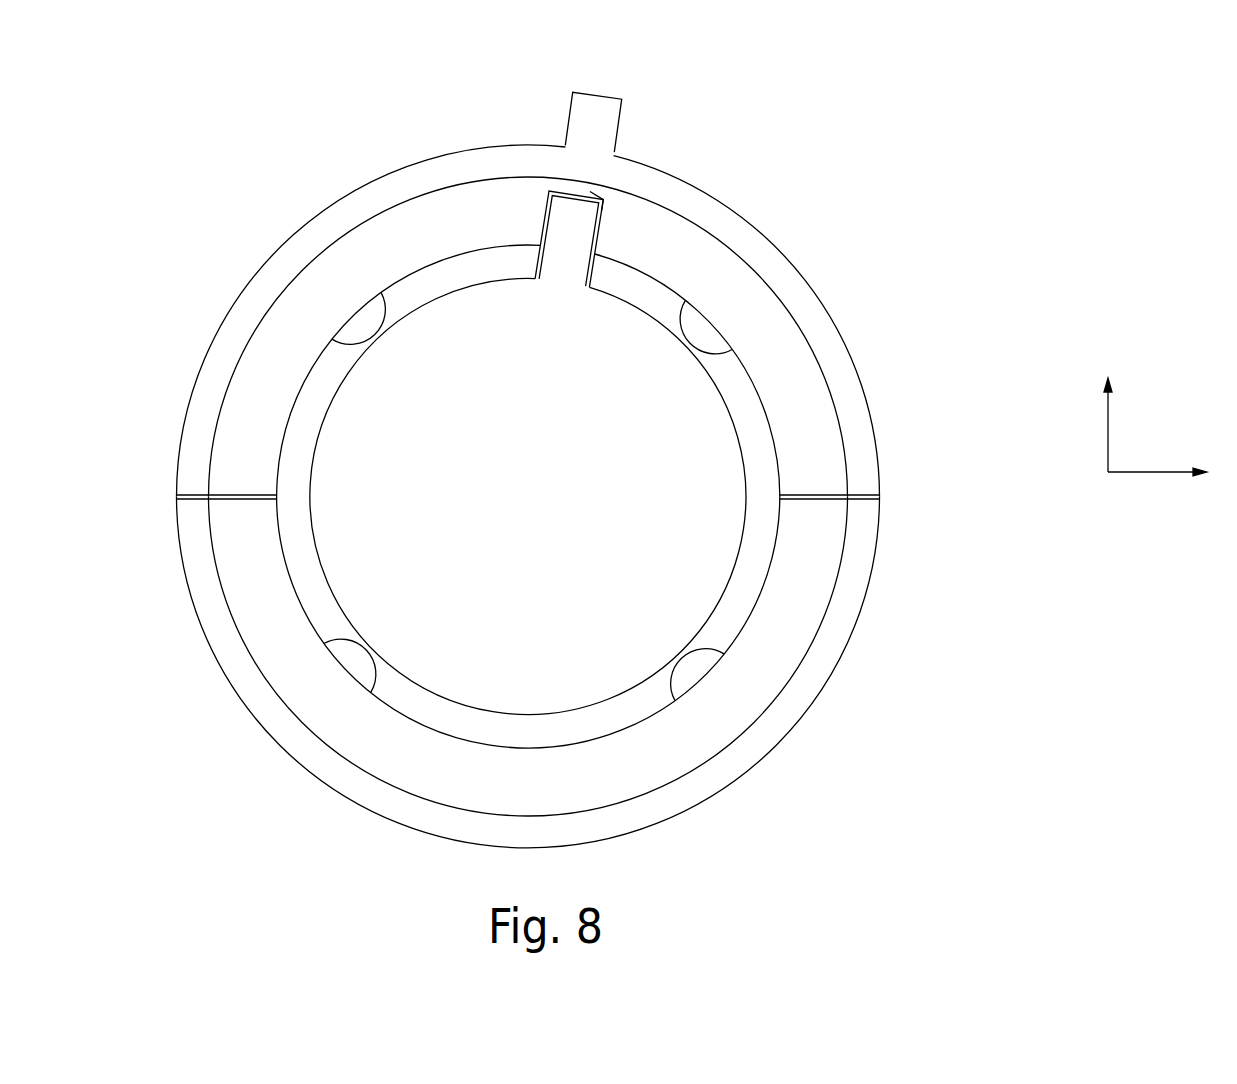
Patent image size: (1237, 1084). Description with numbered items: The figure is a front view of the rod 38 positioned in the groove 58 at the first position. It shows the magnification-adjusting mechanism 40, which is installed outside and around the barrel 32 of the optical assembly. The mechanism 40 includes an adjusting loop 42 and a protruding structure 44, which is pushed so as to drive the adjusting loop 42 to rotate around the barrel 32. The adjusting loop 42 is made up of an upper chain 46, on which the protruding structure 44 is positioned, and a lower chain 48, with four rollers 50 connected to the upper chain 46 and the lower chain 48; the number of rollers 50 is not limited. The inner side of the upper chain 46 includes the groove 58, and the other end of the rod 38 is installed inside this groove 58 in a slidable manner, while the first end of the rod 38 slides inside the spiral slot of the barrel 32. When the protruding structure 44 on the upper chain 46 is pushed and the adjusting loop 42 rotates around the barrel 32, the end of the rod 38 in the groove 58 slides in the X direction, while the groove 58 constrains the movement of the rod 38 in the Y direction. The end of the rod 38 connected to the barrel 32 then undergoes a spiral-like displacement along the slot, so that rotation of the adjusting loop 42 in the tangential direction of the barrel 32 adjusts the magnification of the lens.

The barrel 32 is at (620, 695).
The rod 38 is at (568, 215).
The magnification-adjusting mechanism 40 is at (985, 222).
The adjusting loop 42 is at (953, 393).
The protruding structure 44 is at (597, 103).
The upper chain 46 is at (878, 440).
The lower chain 48 is at (875, 568).
The rollers 50 is at (702, 337).
The groove 58 is at (607, 176).